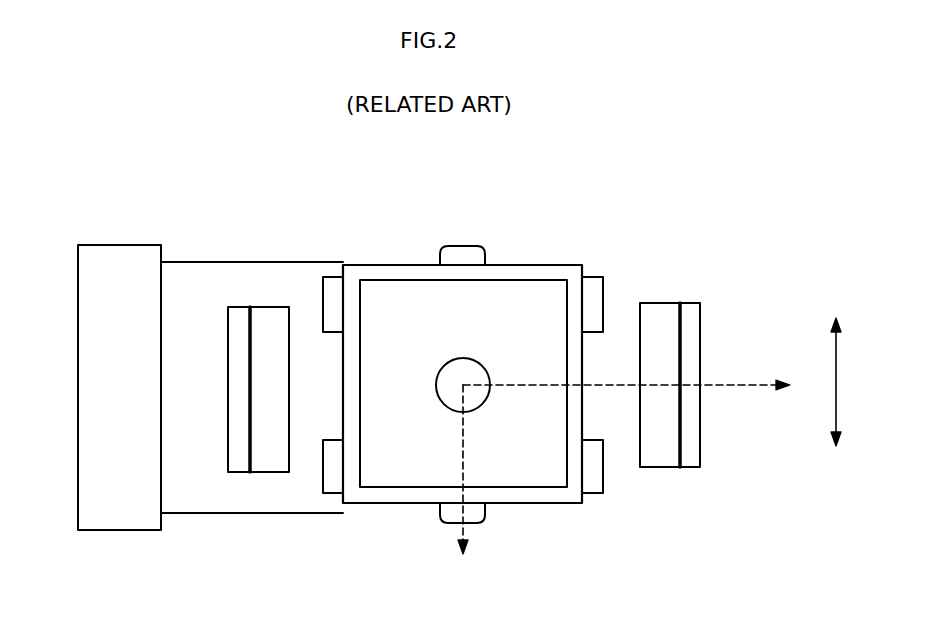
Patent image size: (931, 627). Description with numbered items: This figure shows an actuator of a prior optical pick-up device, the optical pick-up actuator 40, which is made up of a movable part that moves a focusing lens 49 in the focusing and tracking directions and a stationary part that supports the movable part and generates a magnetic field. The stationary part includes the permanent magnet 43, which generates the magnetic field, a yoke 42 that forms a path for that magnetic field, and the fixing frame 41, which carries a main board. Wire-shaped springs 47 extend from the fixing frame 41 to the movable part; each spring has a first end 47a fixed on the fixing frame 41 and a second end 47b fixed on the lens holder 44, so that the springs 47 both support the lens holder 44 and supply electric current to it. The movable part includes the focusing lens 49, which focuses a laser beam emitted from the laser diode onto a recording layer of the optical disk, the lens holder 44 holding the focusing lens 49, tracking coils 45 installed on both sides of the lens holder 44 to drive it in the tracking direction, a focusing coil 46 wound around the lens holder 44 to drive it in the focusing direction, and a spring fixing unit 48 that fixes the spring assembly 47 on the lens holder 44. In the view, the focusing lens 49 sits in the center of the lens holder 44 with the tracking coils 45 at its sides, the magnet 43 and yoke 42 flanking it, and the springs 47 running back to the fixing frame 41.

The optical pick-up actuator 40 is at (671, 211).
The fixing frame 41 is at (96, 354).
The yoke 42 is at (233, 308).
The permanent magnet 43 is at (272, 308).
The lens holder 44 is at (528, 470).
The tracking coils 45 is at (604, 286).
The focusing coil 46 is at (551, 265).
The wire-shaped springs 47 is at (237, 514).
The first end 47a is at (163, 262).
The frame end portion 47b is at (437, 262).
The spring fixing unit 48 is at (478, 520).
The focusing lens 49 is at (473, 372).